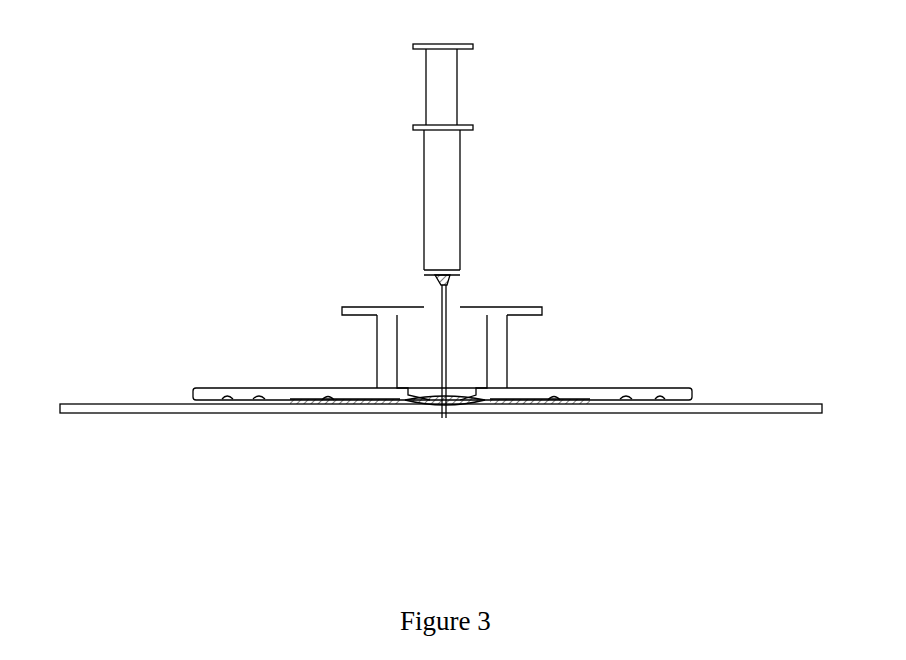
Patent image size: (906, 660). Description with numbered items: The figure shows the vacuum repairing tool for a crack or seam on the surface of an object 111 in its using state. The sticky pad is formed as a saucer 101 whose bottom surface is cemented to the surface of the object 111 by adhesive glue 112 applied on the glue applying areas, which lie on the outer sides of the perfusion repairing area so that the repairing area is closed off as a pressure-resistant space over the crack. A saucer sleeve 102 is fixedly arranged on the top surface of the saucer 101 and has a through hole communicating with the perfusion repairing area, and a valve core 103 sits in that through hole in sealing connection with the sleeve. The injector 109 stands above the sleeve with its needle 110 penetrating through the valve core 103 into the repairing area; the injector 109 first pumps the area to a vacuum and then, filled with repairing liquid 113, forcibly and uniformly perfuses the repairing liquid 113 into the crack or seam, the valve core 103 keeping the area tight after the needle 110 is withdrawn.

The saucer 101 is at (278, 387).
The saucer sleeve 102 is at (383, 357).
The valve core 103 is at (404, 307).
The injector 109 is at (440, 203).
The needle 110 is at (447, 351).
The object 111 is at (170, 412).
The adhesive glue 112 is at (325, 406).
The repairing liquid 113 is at (447, 406).